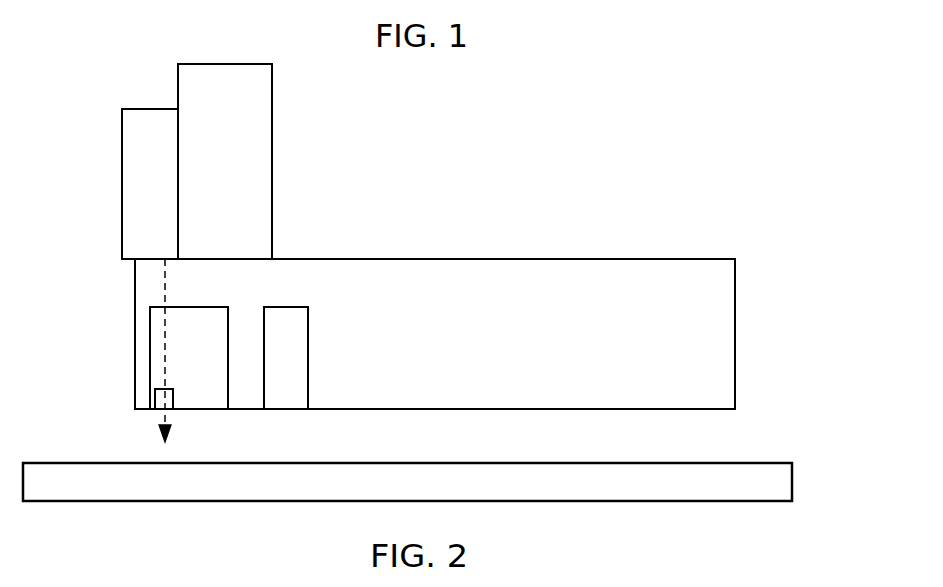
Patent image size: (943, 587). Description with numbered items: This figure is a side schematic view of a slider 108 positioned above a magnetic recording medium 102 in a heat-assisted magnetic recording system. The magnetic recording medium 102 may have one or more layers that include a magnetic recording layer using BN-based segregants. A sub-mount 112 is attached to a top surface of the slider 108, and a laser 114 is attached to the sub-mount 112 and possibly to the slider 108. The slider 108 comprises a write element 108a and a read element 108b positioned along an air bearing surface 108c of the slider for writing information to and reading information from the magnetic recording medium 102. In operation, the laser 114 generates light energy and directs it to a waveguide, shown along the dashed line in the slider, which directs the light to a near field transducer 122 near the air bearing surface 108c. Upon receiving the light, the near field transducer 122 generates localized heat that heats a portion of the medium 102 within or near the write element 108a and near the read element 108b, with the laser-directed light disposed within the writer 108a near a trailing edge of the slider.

The magnetic recording medium 102 is at (792, 481).
The slider 108 is at (651, 259).
The write element 108a is at (195, 307).
The read element 108b is at (299, 307).
The air bearing surface 108c is at (720, 409).
The sub-mount 112 is at (242, 64).
The laser 114 is at (136, 109).
The near field transducer 122 is at (155, 391).